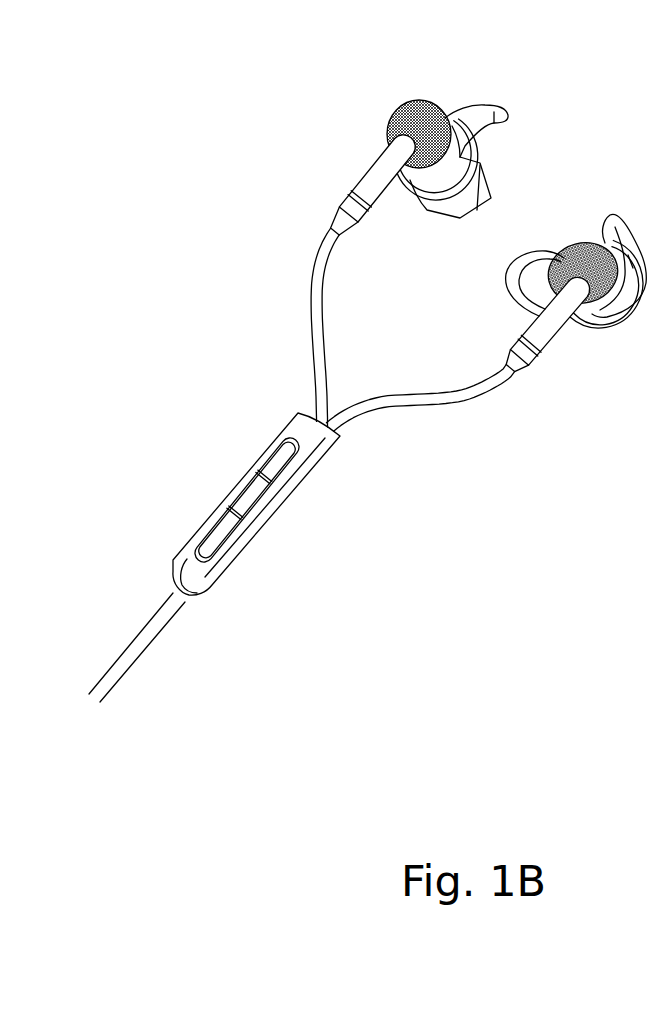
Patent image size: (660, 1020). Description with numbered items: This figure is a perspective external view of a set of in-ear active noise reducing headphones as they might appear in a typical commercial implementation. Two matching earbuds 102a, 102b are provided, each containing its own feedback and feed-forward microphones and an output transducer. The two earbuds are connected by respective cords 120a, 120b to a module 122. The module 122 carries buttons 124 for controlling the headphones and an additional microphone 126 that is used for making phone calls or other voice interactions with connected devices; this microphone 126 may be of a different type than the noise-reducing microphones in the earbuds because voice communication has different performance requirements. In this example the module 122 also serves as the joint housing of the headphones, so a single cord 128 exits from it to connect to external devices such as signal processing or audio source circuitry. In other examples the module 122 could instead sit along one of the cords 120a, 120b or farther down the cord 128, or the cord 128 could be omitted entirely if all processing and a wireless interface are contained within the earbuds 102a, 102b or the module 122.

The earbud 102a is at (426, 100).
The earbud 102b is at (591, 314).
The cord 120a is at (322, 307).
The cord 120b is at (490, 398).
The module 122 is at (322, 433).
The buttons 124 is at (217, 525).
The microphone 126 is at (262, 522).
The cord 128 is at (138, 660).